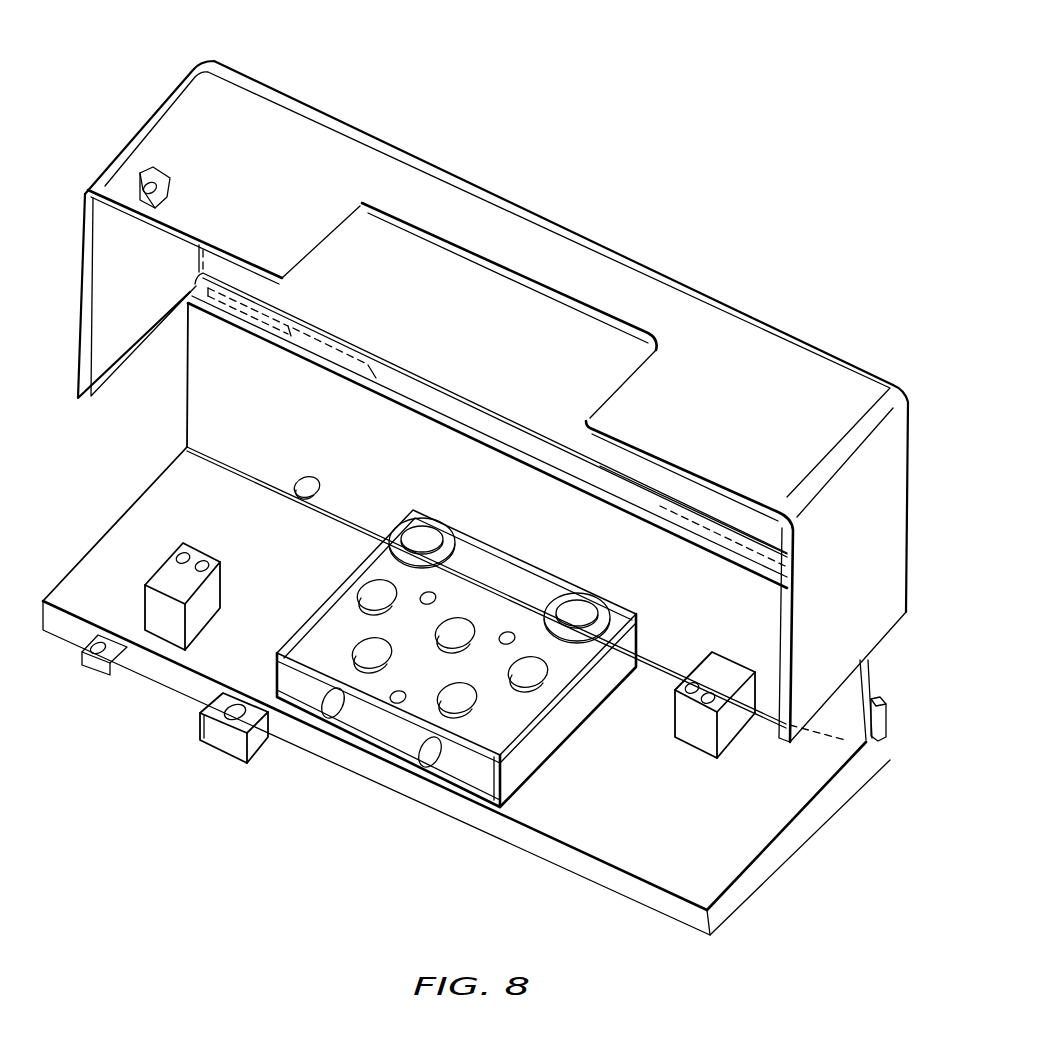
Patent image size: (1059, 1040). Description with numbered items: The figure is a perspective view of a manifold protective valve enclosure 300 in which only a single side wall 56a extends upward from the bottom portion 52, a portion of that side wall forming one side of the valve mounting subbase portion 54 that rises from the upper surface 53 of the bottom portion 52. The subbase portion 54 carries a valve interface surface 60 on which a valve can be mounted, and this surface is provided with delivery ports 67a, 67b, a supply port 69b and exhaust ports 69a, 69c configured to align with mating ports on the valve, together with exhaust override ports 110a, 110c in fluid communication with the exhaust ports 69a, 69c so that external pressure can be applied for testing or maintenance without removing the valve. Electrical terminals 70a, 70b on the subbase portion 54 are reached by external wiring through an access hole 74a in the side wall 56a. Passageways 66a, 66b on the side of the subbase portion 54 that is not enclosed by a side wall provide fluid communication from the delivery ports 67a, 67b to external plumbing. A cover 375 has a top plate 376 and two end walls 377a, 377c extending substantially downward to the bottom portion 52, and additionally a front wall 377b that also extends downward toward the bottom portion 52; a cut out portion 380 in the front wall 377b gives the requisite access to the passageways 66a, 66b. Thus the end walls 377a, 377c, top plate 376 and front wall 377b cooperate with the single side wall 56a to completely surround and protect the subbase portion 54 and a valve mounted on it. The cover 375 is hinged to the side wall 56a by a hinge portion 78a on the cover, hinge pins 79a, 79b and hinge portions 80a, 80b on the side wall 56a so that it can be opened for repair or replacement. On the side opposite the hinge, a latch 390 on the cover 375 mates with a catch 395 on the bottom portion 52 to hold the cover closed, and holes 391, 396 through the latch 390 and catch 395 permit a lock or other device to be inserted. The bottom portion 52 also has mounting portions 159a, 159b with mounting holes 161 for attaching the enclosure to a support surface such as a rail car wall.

The manifold protective valve enclosure 300 is at (600, 141).
The front wall 377b is at (268, 124).
The end wall 377a is at (133, 318).
The end wall 377c is at (870, 613).
The cut out portion 380 is at (407, 226).
The top plate 376 is at (595, 340).
The cover 375 is at (910, 396).
The latch 390 is at (186, 183).
The hole 391 is at (157, 207).
The upper surface 53 is at (177, 500).
The bottom portion 52 is at (755, 873).
The valve mounting subbase portion 54 is at (640, 647).
The side wall 56a is at (210, 397).
The hinge portion 78a is at (234, 297).
The hinge pin 79a is at (310, 342).
The hinge pin 79b is at (740, 550).
The hinge portion 80a is at (368, 352).
The hinge portion 80b is at (713, 530).
The access hole 74a is at (298, 481).
The electrical terminal 70a is at (173, 582).
The electrical terminal 70b is at (715, 673).
The catch 395 is at (92, 672).
The hole 396 is at (112, 647).
The mounting portion 159a is at (200, 704).
The mounting portion 159b is at (887, 723).
The mounting hole 161 is at (233, 711).
The valve interface surface 60 is at (380, 572).
The exhaust override port 110a is at (440, 524).
The exhaust override port 110c is at (587, 597).
The exhaust port 69a is at (365, 592).
The supply port 69b is at (458, 627).
The exhaust port 69c is at (547, 668).
The delivery port 67a is at (470, 690).
The delivery port 67b is at (370, 656).
The passageway 66a is at (333, 712).
The passageway 66b is at (433, 760).